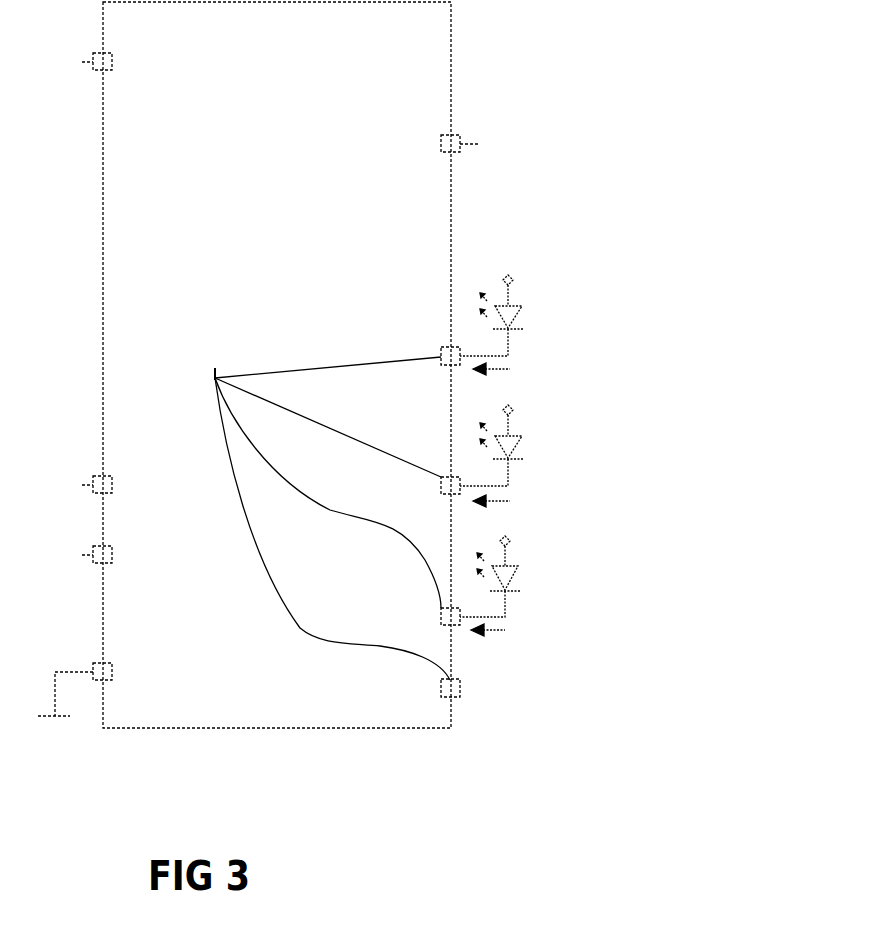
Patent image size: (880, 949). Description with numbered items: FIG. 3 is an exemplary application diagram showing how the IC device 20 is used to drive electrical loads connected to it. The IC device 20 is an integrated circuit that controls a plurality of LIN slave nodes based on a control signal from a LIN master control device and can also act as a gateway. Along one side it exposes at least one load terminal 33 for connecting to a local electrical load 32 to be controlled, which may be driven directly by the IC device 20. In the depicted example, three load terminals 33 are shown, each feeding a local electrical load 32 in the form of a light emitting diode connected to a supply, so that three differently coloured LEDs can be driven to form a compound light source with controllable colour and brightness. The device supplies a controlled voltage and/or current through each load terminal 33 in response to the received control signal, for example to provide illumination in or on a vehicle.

The IC device 20 is at (297, 272).
The local electrical load 32 is at (537, 443).
The load terminal 33 is at (324, 492).